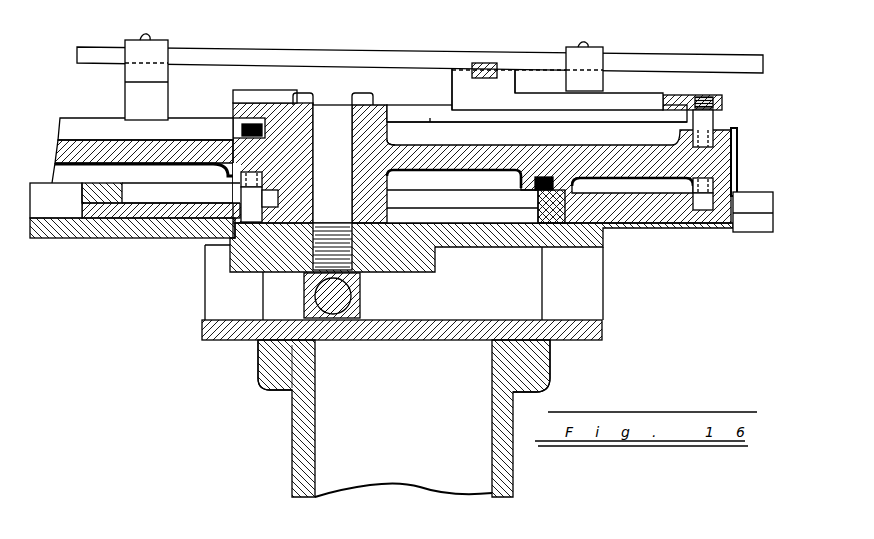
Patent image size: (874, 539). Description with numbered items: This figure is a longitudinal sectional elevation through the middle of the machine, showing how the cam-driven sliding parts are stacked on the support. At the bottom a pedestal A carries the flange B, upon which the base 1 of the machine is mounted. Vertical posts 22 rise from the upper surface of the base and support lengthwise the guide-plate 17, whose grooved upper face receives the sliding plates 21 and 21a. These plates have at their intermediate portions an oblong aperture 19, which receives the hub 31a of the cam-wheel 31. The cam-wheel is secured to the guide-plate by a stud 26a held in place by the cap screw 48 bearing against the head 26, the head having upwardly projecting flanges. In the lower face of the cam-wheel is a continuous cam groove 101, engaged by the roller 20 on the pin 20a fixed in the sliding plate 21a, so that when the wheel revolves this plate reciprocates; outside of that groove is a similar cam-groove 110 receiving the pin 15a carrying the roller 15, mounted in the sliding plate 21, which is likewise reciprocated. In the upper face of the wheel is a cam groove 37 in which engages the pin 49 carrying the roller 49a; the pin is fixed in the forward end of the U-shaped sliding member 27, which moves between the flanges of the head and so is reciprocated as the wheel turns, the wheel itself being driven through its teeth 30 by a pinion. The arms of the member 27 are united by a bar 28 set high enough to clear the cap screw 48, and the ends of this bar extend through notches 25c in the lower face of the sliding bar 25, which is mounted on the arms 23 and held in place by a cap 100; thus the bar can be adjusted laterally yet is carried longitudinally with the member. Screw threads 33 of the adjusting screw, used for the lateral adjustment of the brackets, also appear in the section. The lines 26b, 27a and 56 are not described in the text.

The base 1 is at (258, 352).
The pedestal A is at (303, 456).
The flange B is at (404, 373).
The roller 15 is at (698, 184).
The pin 15a is at (698, 226).
The guide-plate 17 is at (196, 228).
The oblong aperture 19 is at (540, 208).
The roller 20 is at (240, 181).
The pin 20a is at (237, 222).
The sliding plate 21 is at (128, 220).
The sliding plate 21a is at (96, 220).
The vertical posts 22 is at (216, 290).
The arms 23 is at (150, 73).
The sliding bar 25 is at (229, 55).
The notches 25c is at (483, 62).
The head 26 is at (262, 82).
The stud 26a is at (362, 162).
The plate recess 26b is at (381, 116).
The U-shaped member 27 is at (538, 102).
The plate arm 27a is at (457, 78).
The bar 28 is at (490, 68).
The teeth 30 is at (737, 172).
The cam-wheel 31 is at (90, 126).
The hub 31a is at (390, 186).
The screw threads 33 is at (312, 299).
The cam groove 37 is at (244, 126).
The cap screw 48 is at (326, 112).
The pin 49 is at (706, 121).
The roller 49a is at (712, 137).
The ball 56 is at (352, 285).
The caps 100 is at (176, 26).
The cam groove 101 is at (254, 174).
The cam-groove 110 is at (722, 222).